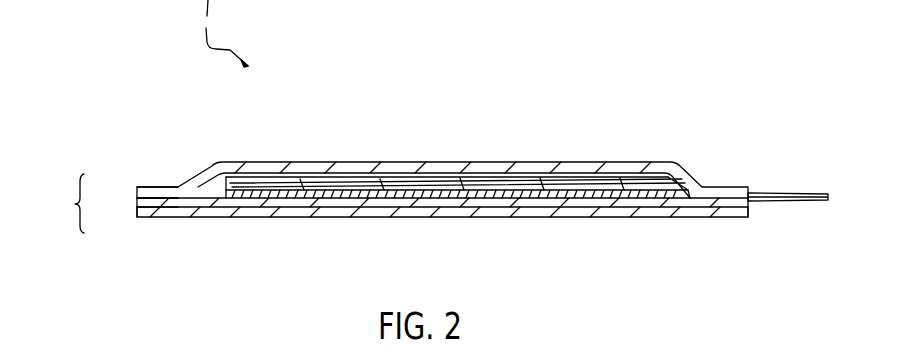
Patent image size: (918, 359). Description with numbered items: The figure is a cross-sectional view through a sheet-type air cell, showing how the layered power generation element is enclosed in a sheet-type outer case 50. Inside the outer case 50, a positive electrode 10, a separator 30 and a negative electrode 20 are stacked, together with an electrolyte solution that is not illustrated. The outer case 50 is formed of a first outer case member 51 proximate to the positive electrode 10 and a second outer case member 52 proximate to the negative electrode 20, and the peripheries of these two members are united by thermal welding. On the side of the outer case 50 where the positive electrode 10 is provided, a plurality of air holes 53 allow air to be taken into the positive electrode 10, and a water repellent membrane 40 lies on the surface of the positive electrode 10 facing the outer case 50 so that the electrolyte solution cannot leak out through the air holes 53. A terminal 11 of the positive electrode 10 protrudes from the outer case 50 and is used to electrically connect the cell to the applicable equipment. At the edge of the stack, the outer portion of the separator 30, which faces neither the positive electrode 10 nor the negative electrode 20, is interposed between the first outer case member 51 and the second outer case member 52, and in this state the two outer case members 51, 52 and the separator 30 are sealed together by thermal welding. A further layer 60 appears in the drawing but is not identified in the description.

The positive electrode 10 is at (512, 177).
The terminal 11 is at (783, 193).
The negative electrode 20 is at (512, 218).
The separator 30 is at (266, 220).
The water repellent membrane 40 is at (362, 162).
The outer case 50 is at (111, 203).
The first outer case member 51 is at (137, 196).
The second outer case member 52 is at (137, 208).
The air holes 53 is at (450, 173).
The cushion layer 60 is at (362, 218).